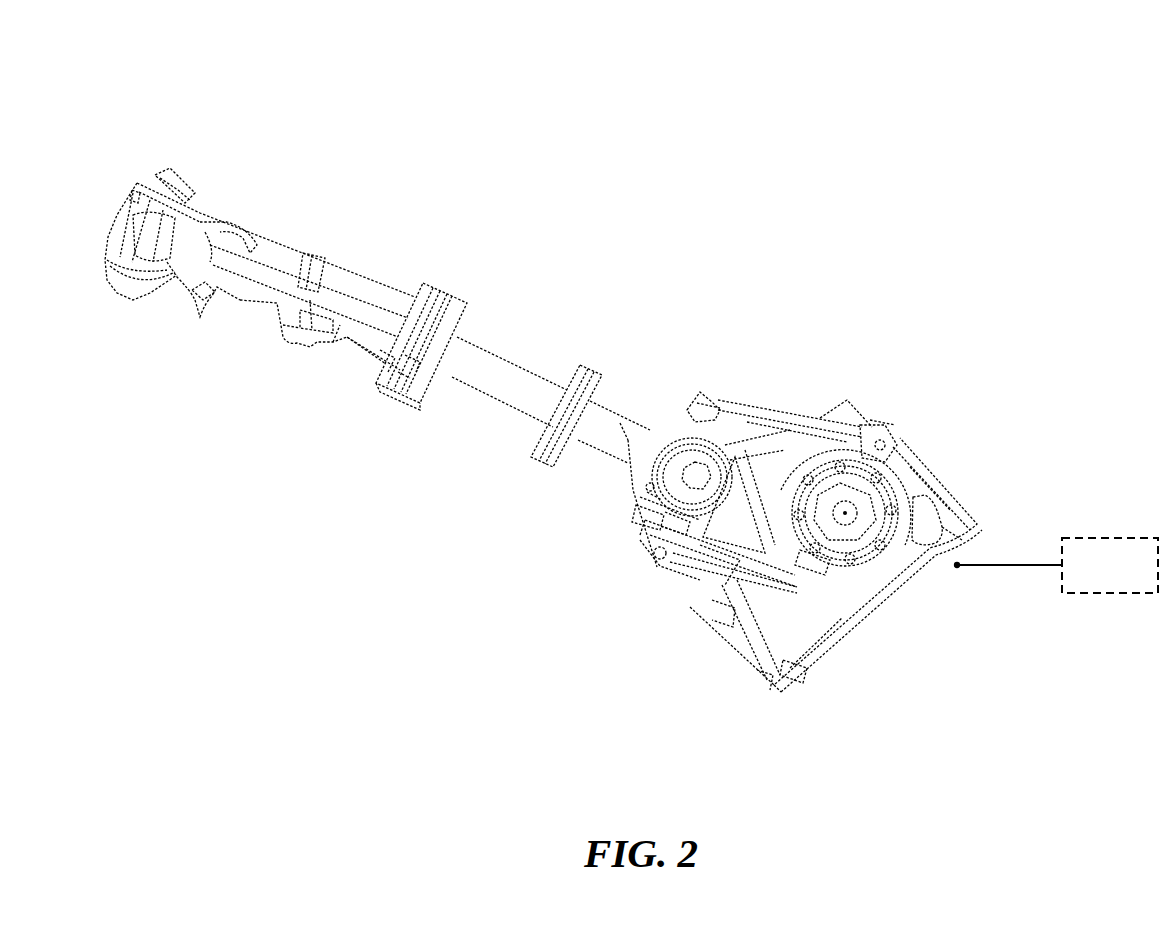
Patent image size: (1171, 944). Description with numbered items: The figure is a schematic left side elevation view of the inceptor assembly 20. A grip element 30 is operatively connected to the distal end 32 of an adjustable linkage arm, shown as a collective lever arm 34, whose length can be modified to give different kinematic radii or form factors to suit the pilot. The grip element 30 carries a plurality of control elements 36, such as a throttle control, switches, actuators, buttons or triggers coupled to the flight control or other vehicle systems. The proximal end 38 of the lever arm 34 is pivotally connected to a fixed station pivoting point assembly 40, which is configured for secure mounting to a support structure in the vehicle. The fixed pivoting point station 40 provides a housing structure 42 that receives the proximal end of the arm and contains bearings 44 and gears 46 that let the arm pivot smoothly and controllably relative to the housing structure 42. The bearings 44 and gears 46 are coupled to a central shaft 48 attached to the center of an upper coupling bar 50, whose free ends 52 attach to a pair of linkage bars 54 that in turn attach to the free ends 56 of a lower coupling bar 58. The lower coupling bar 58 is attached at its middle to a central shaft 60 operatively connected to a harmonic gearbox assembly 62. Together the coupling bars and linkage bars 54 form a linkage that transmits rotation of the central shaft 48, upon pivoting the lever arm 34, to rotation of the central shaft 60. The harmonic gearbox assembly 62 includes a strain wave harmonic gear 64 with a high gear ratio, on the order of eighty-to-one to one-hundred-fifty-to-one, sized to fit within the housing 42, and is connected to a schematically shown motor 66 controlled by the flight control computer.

The inceptor assembly 20 is at (548, 213).
The grip element 30 is at (368, 293).
The distal end 32 is at (452, 367).
The collective lever arm 34 is at (527, 393).
The control elements 36 is at (201, 297).
The proximal end 38 is at (622, 430).
The fixed station pivoting point assembly 40 is at (690, 577).
The housing structure 42 is at (696, 415).
The bearings 44 is at (652, 499).
The gears 46 is at (655, 495).
The central shaft 48 is at (652, 497).
The upper coupling bar 50 is at (677, 520).
The free ends 52 is at (698, 476).
The linkage bars 54 is at (795, 428).
The free ends 56 is at (886, 427).
The lower coupling bar 58 is at (820, 560).
The central shaft 60 is at (888, 543).
The harmonic gearbox assembly 62 is at (900, 477).
The harmonic gear 64 is at (907, 513).
The motor 66 is at (1104, 538).